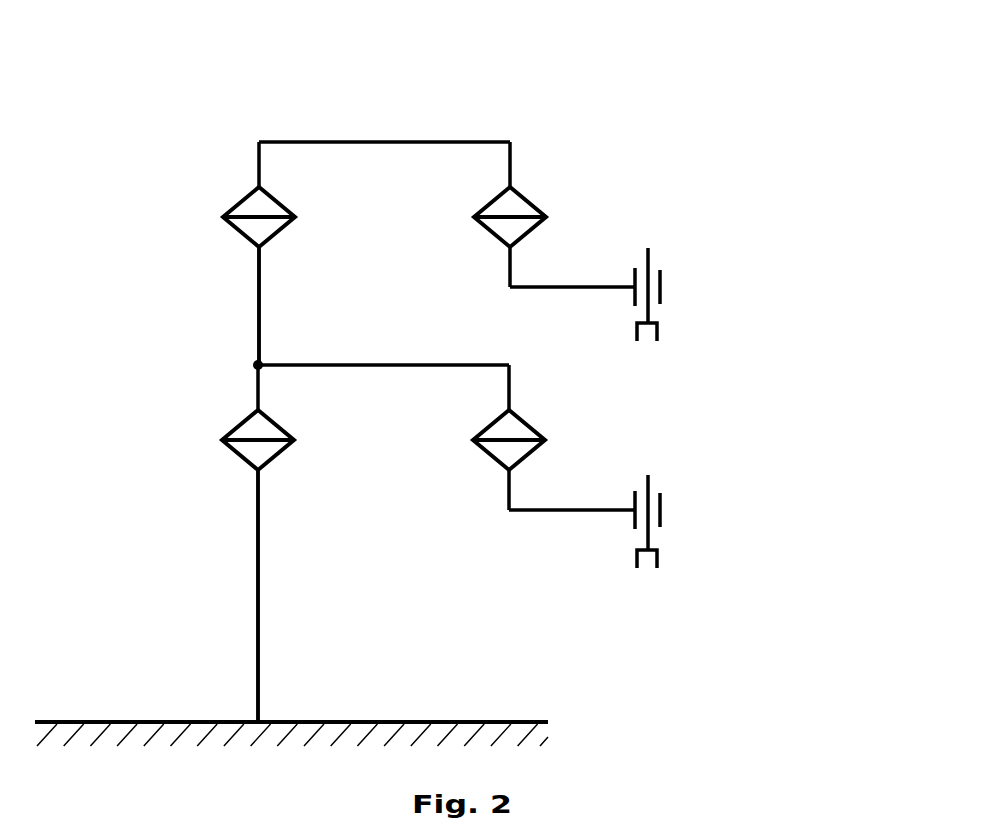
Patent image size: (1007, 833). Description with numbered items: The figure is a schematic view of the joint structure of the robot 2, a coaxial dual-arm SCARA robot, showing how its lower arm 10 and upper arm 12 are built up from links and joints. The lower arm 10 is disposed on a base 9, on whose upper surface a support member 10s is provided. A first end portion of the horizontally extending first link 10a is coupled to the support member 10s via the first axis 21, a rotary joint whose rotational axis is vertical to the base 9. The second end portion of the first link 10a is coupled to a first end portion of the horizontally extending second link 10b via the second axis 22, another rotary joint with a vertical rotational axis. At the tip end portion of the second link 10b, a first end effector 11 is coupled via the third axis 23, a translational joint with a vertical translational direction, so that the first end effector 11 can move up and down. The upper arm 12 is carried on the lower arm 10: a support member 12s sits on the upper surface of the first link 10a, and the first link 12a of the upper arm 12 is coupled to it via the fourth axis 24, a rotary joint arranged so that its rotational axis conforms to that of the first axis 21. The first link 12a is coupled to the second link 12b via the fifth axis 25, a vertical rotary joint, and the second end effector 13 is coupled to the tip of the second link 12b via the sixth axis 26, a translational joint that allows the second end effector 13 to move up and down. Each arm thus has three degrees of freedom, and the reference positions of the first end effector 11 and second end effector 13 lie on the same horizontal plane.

The robot 2 is at (793, 78).
The base 9 is at (440, 722).
The lower arm 10 is at (422, 335).
The first link 10a is at (362, 365).
The second link 10b is at (588, 510).
The support member 10s is at (259, 587).
The first end effector 11 is at (658, 561).
The upper arm 12 is at (423, 107).
The first link 12a is at (361, 140).
The second link 12b is at (588, 287).
The support member 12s is at (259, 290).
The second end effector 13 is at (658, 336).
The first axis 21 is at (277, 423).
The second axis 22 is at (529, 424).
The third axis 23 is at (662, 507).
The fourth axis 24 is at (277, 200).
The fifth axis 25 is at (529, 201).
The sixth axis 26 is at (662, 283).